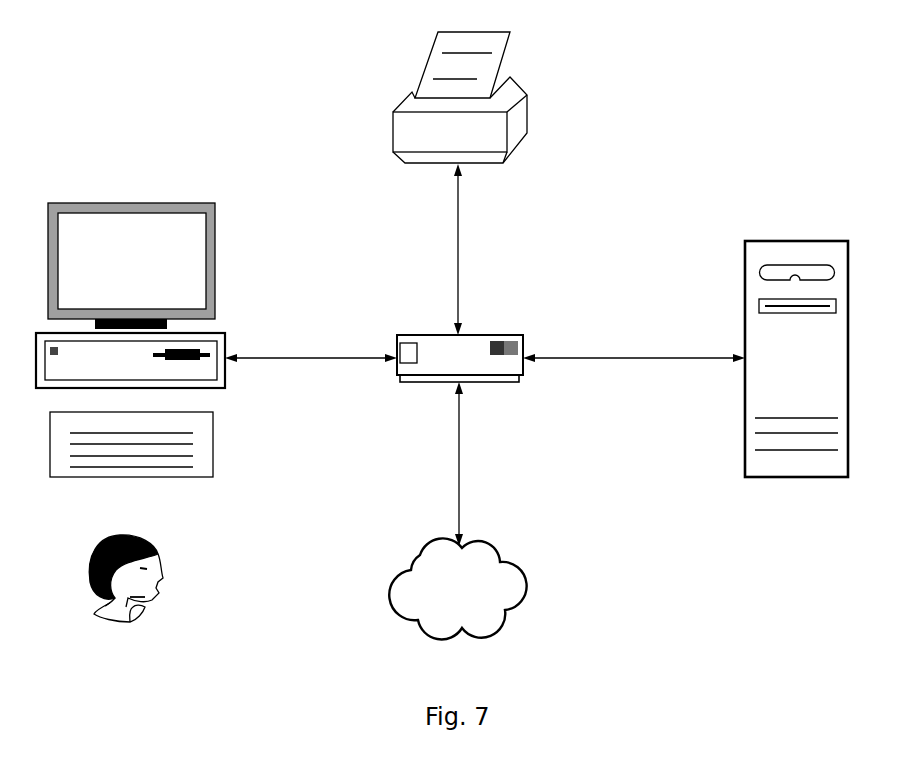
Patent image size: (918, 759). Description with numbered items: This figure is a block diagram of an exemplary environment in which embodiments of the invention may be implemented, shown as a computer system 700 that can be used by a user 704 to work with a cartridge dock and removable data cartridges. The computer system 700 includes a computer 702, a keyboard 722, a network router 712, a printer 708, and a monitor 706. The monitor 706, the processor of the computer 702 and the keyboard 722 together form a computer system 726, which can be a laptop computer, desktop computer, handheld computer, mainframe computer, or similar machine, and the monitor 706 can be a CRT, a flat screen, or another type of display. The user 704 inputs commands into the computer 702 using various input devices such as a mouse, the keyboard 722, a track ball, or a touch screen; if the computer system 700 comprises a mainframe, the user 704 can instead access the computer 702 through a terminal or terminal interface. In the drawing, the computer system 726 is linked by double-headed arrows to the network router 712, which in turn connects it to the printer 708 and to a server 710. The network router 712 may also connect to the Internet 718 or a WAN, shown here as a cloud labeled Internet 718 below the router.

The computer system 700 is at (725, 108).
The computer 702 is at (229, 333).
The user 704 is at (152, 545).
The monitor 706 is at (210, 203).
The printer 708 is at (393, 140).
The server 710 is at (750, 460).
The network router 712 is at (490, 335).
The Internet 718 is at (487, 556).
The keyboard 722 is at (213, 435).
The computer system 726 is at (218, 255).